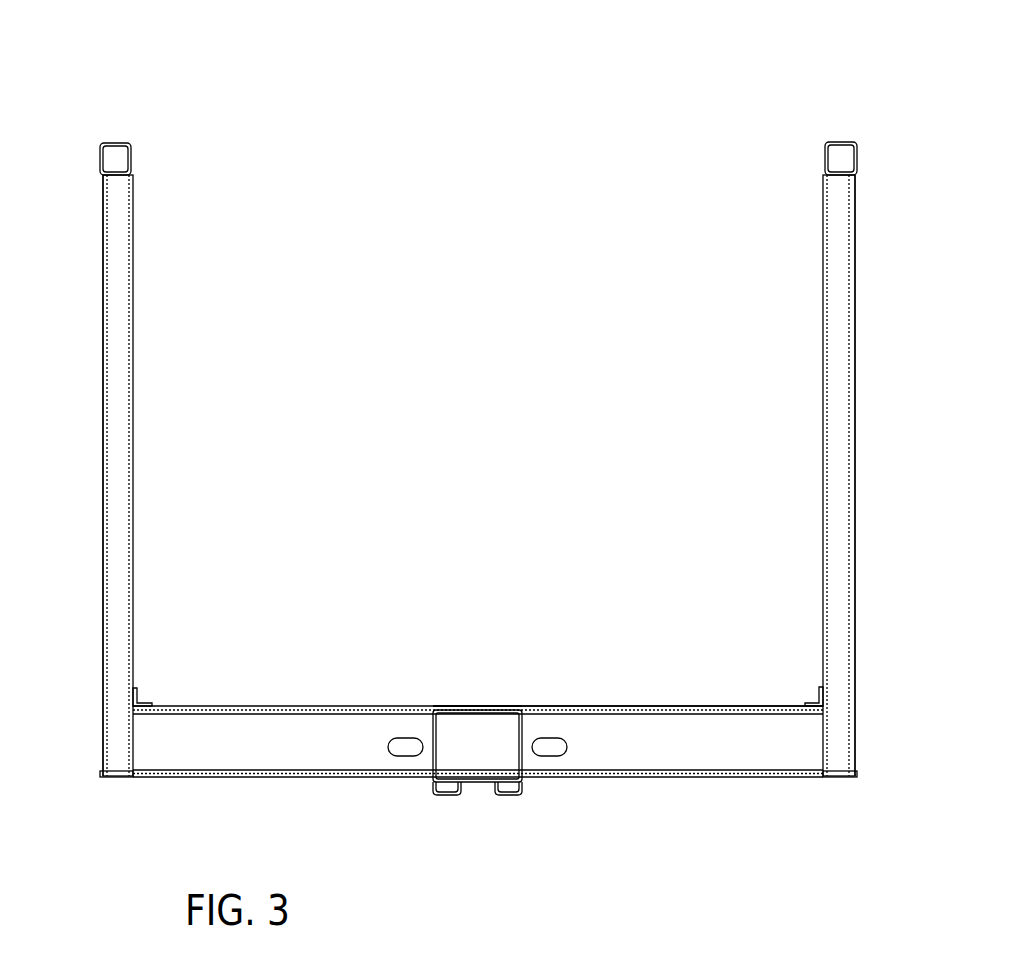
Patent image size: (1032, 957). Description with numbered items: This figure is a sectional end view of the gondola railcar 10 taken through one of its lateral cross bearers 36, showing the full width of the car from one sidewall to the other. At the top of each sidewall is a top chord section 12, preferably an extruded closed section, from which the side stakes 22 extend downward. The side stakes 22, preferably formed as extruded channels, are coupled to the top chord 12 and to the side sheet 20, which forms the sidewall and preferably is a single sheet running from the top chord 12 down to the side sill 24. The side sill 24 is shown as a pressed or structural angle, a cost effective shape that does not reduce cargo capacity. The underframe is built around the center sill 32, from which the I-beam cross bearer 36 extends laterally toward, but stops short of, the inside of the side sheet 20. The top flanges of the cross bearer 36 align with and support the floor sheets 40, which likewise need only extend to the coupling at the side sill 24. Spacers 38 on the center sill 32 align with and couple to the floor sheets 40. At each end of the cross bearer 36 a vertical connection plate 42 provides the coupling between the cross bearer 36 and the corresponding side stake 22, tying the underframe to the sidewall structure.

The railcar 10 is at (619, 70).
The top chord section 12 is at (118, 157).
The side sheet 20 is at (127, 583).
The side stake 22 is at (105, 453).
The side sill 24 is at (137, 698).
The center sill 32 is at (512, 792).
The cross bearer 36 is at (285, 777).
The spacer 38 is at (478, 707).
The floor sheet 40 is at (613, 707).
The vertical connection plate 42 is at (134, 777).